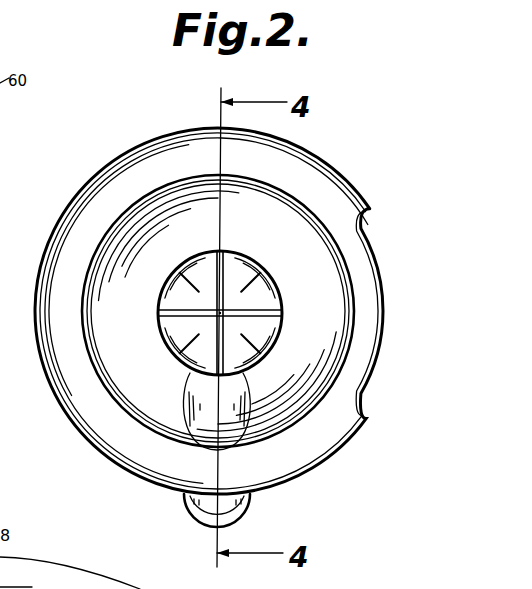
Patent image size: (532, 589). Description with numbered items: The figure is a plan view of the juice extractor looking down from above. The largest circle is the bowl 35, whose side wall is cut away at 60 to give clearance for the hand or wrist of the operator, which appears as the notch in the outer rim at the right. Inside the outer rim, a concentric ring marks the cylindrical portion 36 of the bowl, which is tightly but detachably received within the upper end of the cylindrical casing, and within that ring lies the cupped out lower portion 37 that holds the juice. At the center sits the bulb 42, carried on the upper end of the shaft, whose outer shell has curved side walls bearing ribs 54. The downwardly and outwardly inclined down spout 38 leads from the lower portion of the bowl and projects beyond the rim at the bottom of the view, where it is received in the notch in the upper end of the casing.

The bowl 35 is at (58, 348).
The cylindrical portion 36 is at (348, 298).
The cupped out lower portion 37 is at (267, 237).
The down spout 38 is at (204, 517).
The bulb 42 is at (211, 313).
The ribs 54 is at (258, 281).
The cut away 60 is at (382, 296).